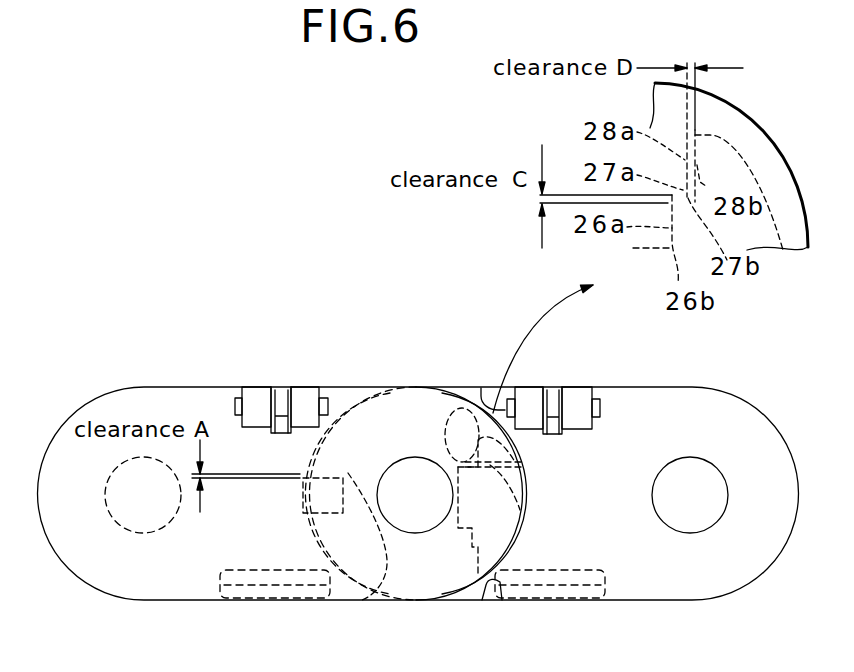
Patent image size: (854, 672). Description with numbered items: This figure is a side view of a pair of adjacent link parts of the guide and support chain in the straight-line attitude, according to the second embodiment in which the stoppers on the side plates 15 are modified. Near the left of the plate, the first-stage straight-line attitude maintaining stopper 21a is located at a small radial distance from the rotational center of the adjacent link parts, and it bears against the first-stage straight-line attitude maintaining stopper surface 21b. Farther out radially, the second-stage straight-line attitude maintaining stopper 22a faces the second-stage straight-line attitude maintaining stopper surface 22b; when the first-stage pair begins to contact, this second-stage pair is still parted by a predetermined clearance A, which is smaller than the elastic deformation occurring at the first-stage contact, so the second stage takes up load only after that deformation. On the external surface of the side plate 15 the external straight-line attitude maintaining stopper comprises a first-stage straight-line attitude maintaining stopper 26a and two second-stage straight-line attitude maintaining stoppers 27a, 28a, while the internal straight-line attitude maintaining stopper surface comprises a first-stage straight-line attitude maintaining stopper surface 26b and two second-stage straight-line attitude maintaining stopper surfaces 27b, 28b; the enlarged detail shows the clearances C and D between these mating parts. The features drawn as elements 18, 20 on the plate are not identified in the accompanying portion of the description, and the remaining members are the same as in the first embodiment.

The side plate 15 is at (152, 398).
The bushing hole 18 is at (415, 526).
The pin hole 20 is at (690, 527).
The first-stage straight-line attitude maintaining stopper 21a is at (350, 472).
The first-stage straight-line attitude maintaining stopper surface 21b is at (385, 522).
The second-stage straight-line attitude maintaining stopper 22a is at (307, 465).
The second-stage straight-line attitude maintaining stopper surface 22b is at (305, 490).
The first-stage straight-line attitude maintaining stopper 26a is at (450, 436).
The first-stage straight-line attitude maintaining stopper surface 26b is at (515, 510).
The second-stage straight-line attitude maintaining stopper 27a is at (428, 400).
The second-stage straight-line attitude maintaining stopper surface 27b is at (525, 470).
The second-stage straight-line attitude maintaining stopper 28a is at (473, 392).
The second-stage straight-line attitude maintaining stopper surface 28b is at (528, 458).